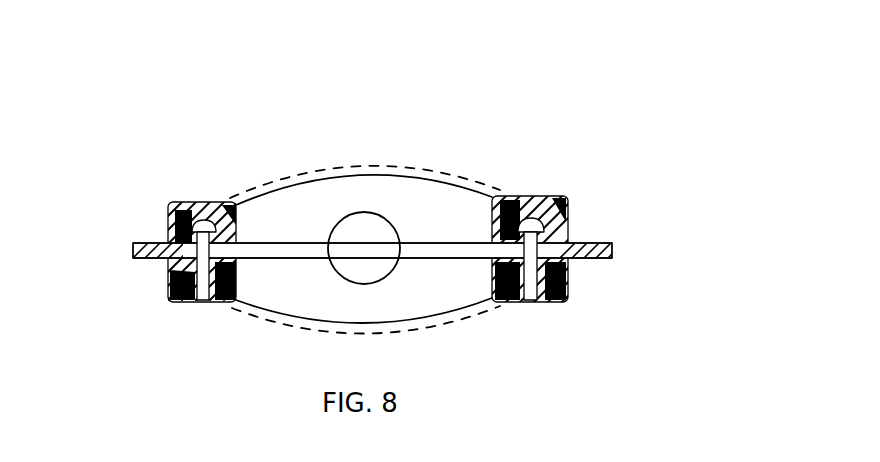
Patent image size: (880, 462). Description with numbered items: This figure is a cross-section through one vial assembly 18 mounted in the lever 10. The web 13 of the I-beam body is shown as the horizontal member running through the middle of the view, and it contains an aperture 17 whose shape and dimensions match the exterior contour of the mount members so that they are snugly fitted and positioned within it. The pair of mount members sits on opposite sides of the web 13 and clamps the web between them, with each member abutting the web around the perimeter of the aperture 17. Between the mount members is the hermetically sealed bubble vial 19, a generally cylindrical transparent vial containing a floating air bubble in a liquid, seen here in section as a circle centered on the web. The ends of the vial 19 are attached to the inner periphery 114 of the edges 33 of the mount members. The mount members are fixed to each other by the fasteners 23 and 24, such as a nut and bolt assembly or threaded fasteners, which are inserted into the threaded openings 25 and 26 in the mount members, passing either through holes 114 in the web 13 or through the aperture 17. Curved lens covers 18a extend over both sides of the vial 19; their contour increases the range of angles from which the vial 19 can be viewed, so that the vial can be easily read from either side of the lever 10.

The lever 10 is at (123, 68).
The web 13 is at (605, 238).
The aperture 17 is at (488, 255).
The vial assembly 18 is at (472, 175).
The lens cover 18a is at (330, 165).
The bubble vial 19 is at (383, 217).
The fastener 23 is at (203, 202).
The fastener 24 is at (546, 215).
The opening 25 is at (202, 305).
The opening 26 is at (540, 302).
The edge 33 is at (173, 203).
The inner periphery 114 is at (140, 247).